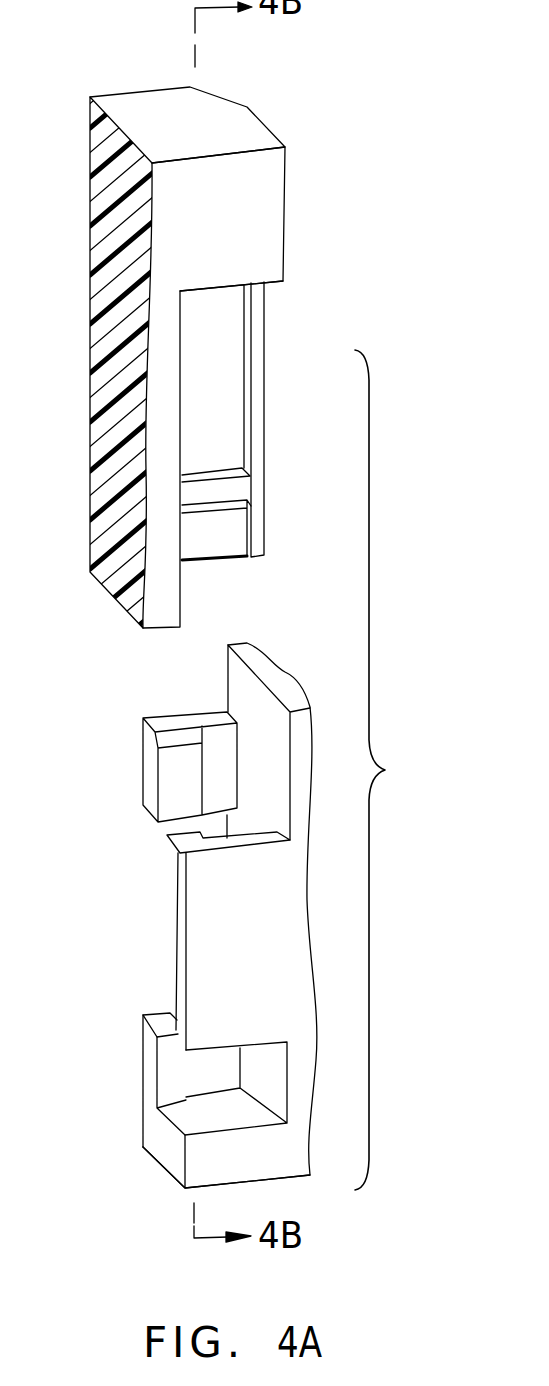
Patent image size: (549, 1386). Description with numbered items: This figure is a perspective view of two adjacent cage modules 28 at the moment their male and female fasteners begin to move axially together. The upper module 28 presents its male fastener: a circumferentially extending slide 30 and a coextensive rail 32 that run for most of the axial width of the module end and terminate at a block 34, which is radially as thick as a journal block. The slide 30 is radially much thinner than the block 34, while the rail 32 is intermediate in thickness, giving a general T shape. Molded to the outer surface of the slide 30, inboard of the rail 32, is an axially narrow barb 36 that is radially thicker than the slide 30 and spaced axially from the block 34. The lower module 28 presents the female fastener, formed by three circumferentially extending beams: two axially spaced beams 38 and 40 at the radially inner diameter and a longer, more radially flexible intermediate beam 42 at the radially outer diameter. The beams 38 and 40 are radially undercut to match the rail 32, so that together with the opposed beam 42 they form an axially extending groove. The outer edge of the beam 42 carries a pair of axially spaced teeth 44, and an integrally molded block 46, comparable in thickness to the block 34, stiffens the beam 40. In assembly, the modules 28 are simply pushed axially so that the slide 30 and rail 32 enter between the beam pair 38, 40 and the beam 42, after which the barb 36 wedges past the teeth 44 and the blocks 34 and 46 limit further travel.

The module 28 is at (221, 603).
The slide 30 is at (220, 343).
The rail 32 is at (257, 428).
The block 34 is at (243, 167).
The barb 36 is at (237, 495).
The beam 38 is at (147, 780).
The beam 40 is at (147, 1083).
The intermediate beam 42 is at (207, 948).
The teeth 44 is at (167, 855).
The block 46 is at (213, 1153).